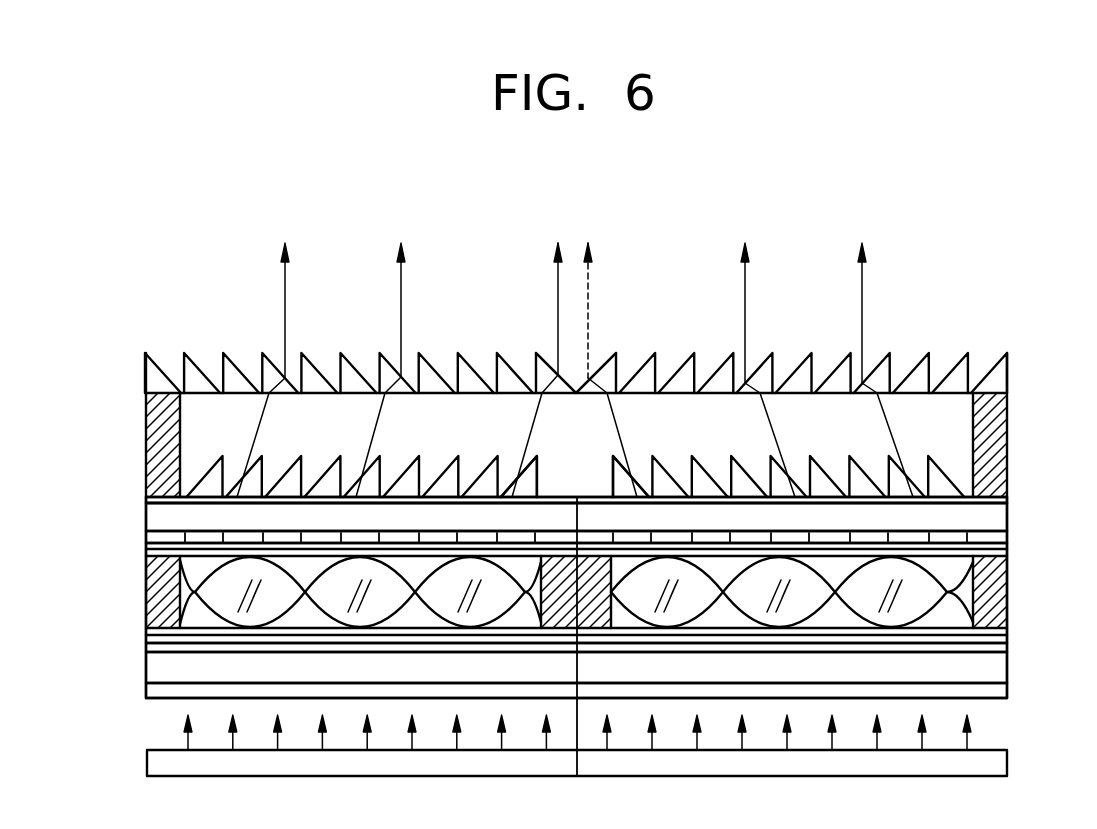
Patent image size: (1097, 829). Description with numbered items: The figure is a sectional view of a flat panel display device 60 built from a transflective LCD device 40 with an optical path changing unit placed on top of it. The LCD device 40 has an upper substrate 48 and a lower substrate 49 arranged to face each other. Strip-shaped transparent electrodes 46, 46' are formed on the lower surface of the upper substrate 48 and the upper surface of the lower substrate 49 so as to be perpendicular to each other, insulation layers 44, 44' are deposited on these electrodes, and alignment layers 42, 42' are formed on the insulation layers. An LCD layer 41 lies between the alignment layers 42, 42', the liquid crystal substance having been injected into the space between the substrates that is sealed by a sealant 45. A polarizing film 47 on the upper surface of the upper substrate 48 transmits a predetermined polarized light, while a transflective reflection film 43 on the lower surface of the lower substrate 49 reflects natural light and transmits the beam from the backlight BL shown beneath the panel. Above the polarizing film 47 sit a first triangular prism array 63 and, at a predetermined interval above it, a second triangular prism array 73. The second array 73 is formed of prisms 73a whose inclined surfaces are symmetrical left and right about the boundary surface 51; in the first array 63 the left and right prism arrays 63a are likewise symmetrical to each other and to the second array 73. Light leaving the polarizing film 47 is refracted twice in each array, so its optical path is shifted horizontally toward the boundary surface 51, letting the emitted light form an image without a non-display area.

The LCD device 40 is at (76, 507).
The LCD layer 41 is at (232, 578).
The alignment layer 42 is at (608, 560).
The alignment layer 42' is at (611, 621).
The transflective reflection film 43 is at (1007, 690).
The insulation layer 44 is at (545, 544).
The insulation layer 44' is at (544, 646).
The sealant 45 is at (156, 600).
The transparent electrode 46 is at (608, 538).
The transparent electrode 46' is at (611, 646).
The polarizing film 47 is at (1010, 494).
The upper substrate 48 is at (1005, 517).
The lower substrate 49 is at (1007, 670).
The boundary surface 51 is at (577, 497).
The flat panel display device 60 is at (1000, 288).
The first triangular prism array 63 is at (227, 427).
The prism array 63a is at (608, 474).
The second triangular prism array 73 is at (253, 213).
The prism 73a is at (538, 370).
The backlight BL is at (1010, 762).